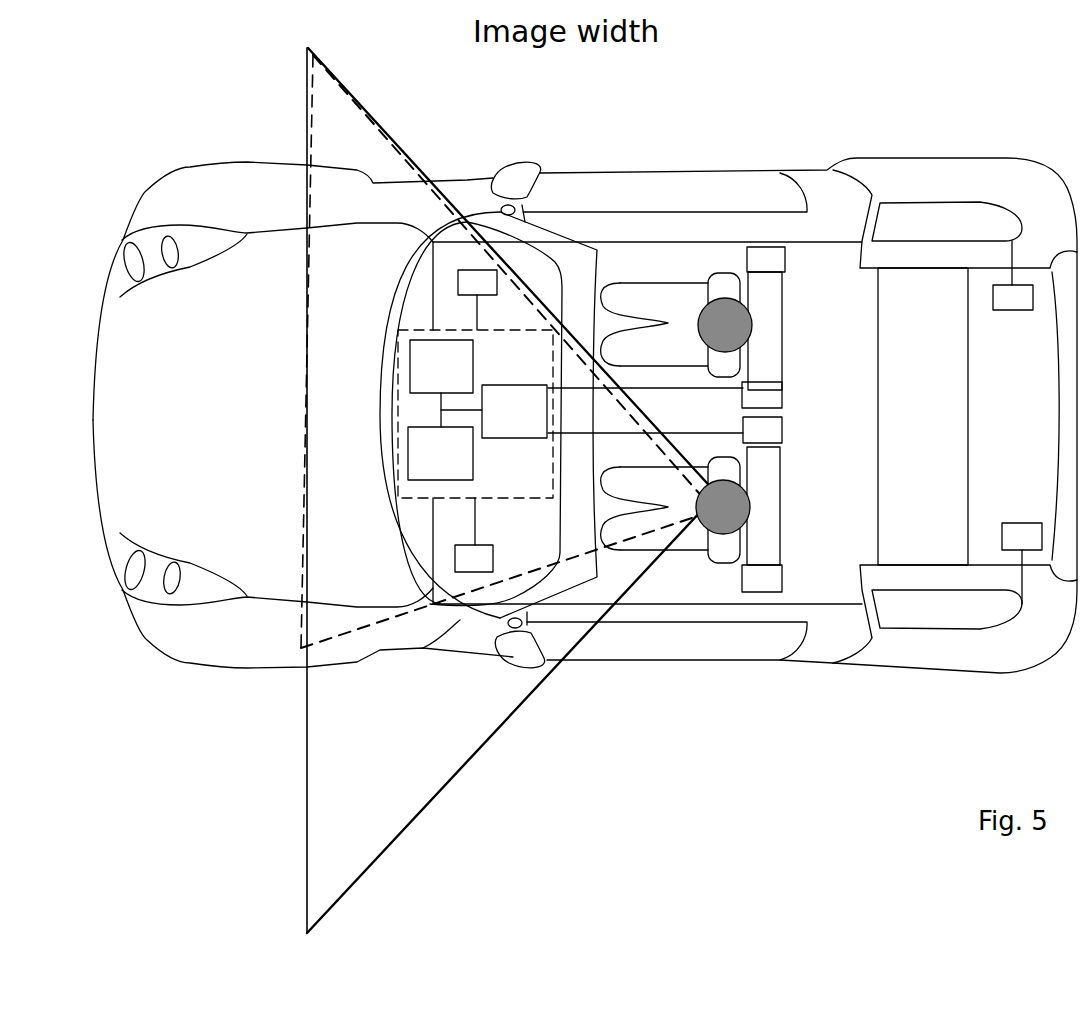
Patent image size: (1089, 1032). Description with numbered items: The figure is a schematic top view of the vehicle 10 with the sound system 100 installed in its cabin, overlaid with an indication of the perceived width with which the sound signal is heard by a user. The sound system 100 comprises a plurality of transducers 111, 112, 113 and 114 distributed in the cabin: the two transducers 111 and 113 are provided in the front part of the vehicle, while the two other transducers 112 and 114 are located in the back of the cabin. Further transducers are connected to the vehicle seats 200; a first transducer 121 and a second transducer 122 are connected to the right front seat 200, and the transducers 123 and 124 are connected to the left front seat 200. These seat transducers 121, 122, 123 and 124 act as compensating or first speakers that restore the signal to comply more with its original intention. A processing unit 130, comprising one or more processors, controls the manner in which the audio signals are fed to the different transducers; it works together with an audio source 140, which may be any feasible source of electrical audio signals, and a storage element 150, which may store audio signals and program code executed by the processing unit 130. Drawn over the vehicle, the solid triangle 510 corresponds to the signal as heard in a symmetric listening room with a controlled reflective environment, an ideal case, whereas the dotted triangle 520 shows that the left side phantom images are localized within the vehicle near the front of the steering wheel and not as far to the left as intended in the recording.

The vehicle 10 is at (116, 147).
The sound system 100 is at (570, 414).
The transducer 111 is at (497, 283).
The transducer 112 is at (1012, 310).
The transducer 113 is at (493, 558).
The transducer 114 is at (1005, 523).
The first transducer 121 is at (785, 259).
The second transducer 122 is at (782, 398).
The transducer 123 is at (782, 435).
The transducer 124 is at (782, 573).
The processing unit 130 is at (440, 436).
The audio source 140 is at (441, 366).
The storage element 150 is at (494, 411).
The vehicle seat 200 is at (803, 498).
The solid triangle 510 is at (536, 741).
The dotted triangle 520 is at (333, 645).